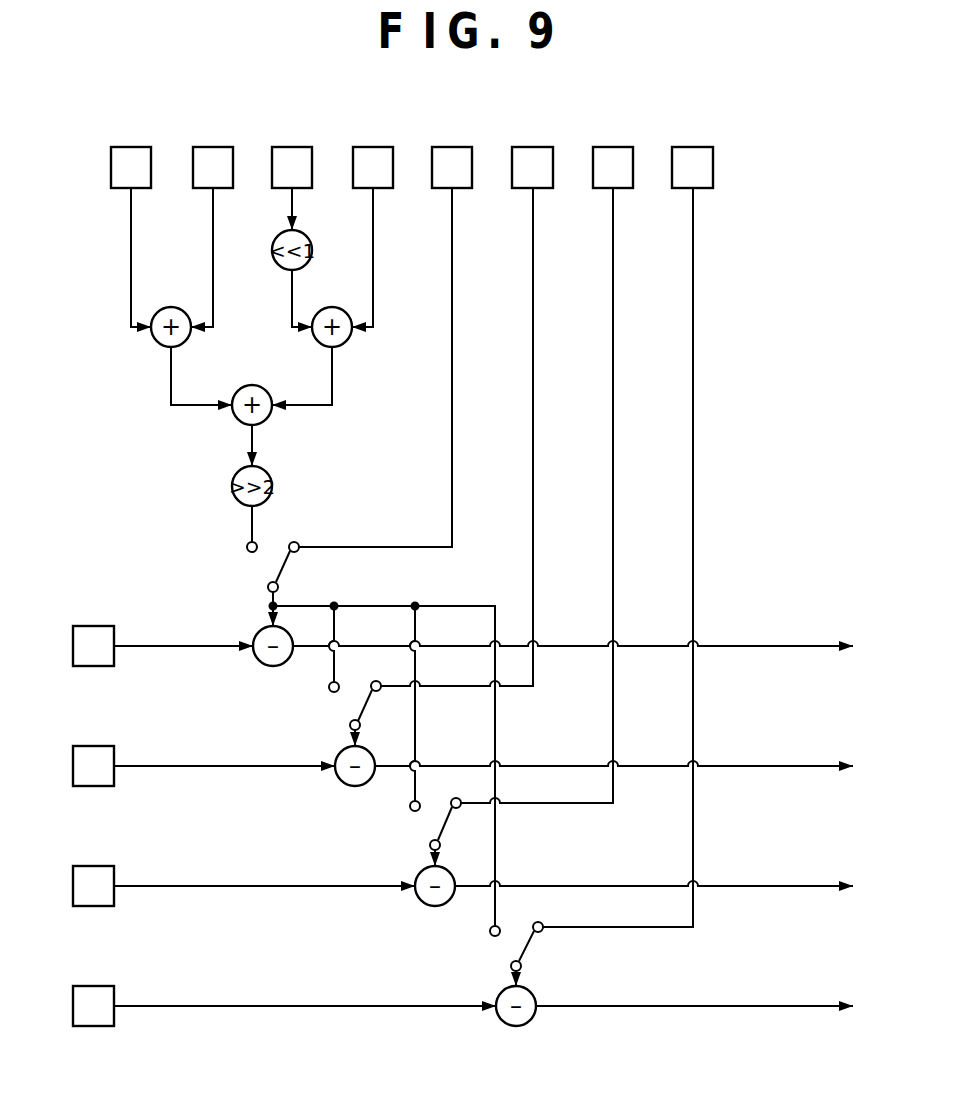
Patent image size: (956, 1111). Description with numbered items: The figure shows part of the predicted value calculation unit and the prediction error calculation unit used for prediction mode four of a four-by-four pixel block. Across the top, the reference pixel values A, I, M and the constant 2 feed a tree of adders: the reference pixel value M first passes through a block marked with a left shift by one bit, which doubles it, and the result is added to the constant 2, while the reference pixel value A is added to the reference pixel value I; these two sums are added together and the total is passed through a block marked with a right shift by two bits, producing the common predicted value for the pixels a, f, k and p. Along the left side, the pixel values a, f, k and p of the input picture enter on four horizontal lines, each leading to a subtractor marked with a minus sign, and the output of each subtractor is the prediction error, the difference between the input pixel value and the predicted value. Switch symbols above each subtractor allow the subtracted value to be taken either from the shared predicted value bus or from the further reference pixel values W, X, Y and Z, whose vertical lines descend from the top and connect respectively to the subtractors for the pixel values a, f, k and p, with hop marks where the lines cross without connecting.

The reference pixel value A is at (131, 237).
The reference pixel value I is at (212, 237).
The reference pixel value M is at (292, 237).
The rounding constant 2 is at (372, 237).
The reference pixel value W is at (370, 386).
The reference pixel value X is at (451, 446).
The reference pixel value Y is at (531, 506).
The reference pixel value Z is at (612, 566).
The encoding target pixel value a is at (463, 646).
The encoding target pixel value f is at (463, 766).
The encoding target pixel value k is at (463, 886).
The encoding target pixel value p is at (463, 1006).